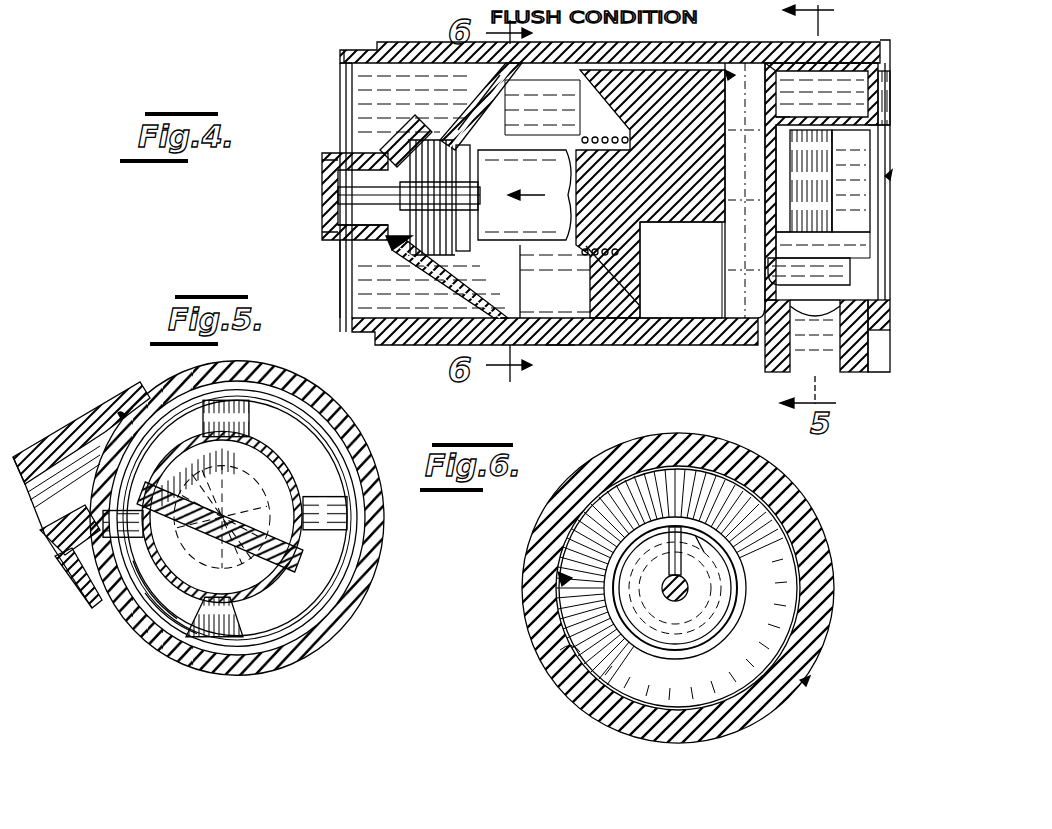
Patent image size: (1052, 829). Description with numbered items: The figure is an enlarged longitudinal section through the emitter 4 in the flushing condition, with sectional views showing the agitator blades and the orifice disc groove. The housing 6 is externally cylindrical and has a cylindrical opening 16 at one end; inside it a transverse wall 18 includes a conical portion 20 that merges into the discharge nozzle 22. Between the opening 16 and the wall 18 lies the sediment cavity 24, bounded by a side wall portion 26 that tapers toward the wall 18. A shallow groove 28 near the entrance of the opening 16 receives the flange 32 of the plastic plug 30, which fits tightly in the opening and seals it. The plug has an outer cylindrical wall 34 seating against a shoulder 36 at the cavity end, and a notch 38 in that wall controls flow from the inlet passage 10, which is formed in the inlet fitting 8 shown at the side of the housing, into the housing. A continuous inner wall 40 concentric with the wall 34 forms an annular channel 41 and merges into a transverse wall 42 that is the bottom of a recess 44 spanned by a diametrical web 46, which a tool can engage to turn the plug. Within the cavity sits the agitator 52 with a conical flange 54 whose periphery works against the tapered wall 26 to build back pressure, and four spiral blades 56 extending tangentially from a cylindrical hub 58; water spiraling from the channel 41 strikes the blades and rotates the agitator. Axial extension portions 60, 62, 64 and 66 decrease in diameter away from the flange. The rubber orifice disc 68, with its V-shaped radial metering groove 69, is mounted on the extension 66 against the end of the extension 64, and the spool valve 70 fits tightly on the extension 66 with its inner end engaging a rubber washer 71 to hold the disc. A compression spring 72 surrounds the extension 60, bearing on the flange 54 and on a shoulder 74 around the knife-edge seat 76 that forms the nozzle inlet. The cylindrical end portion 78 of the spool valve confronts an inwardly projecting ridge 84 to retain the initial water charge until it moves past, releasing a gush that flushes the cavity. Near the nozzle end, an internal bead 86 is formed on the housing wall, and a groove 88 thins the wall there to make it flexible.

In FIG. 5, the emitter 4 is at (324, 652).
In FIG. 6, the emitter 4 is at (808, 680).
In FIG. 4, the housing 6 is at (592, 345).
In FIG. 5, the housing 6 is at (316, 392).
In FIG. 6, the housing 6 is at (790, 502).
In FIG. 4, the inlet pipe 8 is at (868, 356).
In FIG. 5, the inlet pipe 8 is at (36, 452).
In FIG. 4, the inlet passage 10 is at (828, 362).
In FIG. 5, the inlet passage 10 is at (46, 516).
In FIG. 4, the cylindrical opening 16 is at (888, 92).
In FIG. 4, the transverse wall 18 is at (426, 124).
In FIG. 4, the conical portion 20 is at (452, 296).
In FIG. 4, the discharge nozzle 22 is at (340, 250).
In FIG. 4, the sediment cavity 24 is at (552, 306).
In FIG. 6, the sediment cavity 24 is at (580, 650).
In FIG. 4, the side wall portion 26 is at (556, 346).
In FIG. 4, the shallow groove 28 is at (882, 42).
In FIG. 4, the plastic plug 30 is at (888, 176).
In FIG. 4, the flange 32 is at (868, 246).
In FIG. 4, the outer cylindrical wall 34 is at (810, 66).
In FIG. 5, the outer cylindrical wall 34 is at (122, 638).
In FIG. 4, the shoulder 36 is at (765, 84).
In FIG. 4, the notch 38 is at (800, 284).
In FIG. 5, the notch 38 is at (118, 418).
In FIG. 4, the inner wall 40 is at (800, 116).
In FIG. 5, the inner wall 40 is at (262, 592).
In FIG. 4, the annular channel 41 is at (790, 102).
In FIG. 5, the annular channel 41 is at (104, 598).
In FIG. 4, the transverse wall 42 is at (745, 207).
In FIG. 4, the recess 44 is at (882, 138).
In FIG. 4, the web 46 is at (838, 176).
In FIG. 5, the web 46 is at (214, 568).
In FIG. 4, the agitator 52 is at (730, 72).
In FIG. 5, the agitator 52 is at (254, 646).
In FIG. 6, the agitator 52 is at (562, 578).
In FIG. 4, the conical flange 54 is at (605, 96).
In FIG. 6, the conical flange 54 is at (780, 548).
In FIG. 4, the spiral blades 56 is at (722, 142).
In FIG. 5, the spiral blades 56 is at (246, 398).
In FIG. 4, the cylindrical hub 58 is at (672, 234).
In FIG. 5, the cylindrical hub 58 is at (264, 460).
In FIG. 4, the axial extension portion 60 is at (612, 276).
In FIG. 4, the axial extension portion 62 is at (524, 150).
In FIG. 4, the axial extension portion 64 is at (470, 250).
In FIG. 4, the axial extension portion 66 is at (338, 198).
In FIG. 6, the axial extension portion 66 is at (672, 601).
In FIG. 4, the orifice disc 68 is at (481, 106).
In FIG. 6, the orifice disc 68 is at (700, 620).
In FIG. 4, the radial metering groove 69 is at (472, 108).
In FIG. 6, the radial metering groove 69 is at (678, 530).
In FIG. 4, the spool valve 70 is at (322, 178).
In FIG. 4, the rubber washer 71 is at (470, 210).
In FIG. 6, the rubber washer 71 is at (702, 592).
In FIG. 4, the compression spring 72 is at (582, 262).
In FIG. 6, the compression spring 72 is at (704, 536).
In FIG. 4, the shoulder 74 is at (430, 272).
In FIG. 4, the knife-edge seat 76 is at (398, 146).
In FIG. 4, the cylindrical end portion 78 is at (338, 228).
In FIG. 4, the inwardly projecting ridge 84 is at (408, 255).
In FIG. 4, the internal bead 86 is at (340, 70).
In FIG. 4, the groove 88 is at (350, 50).